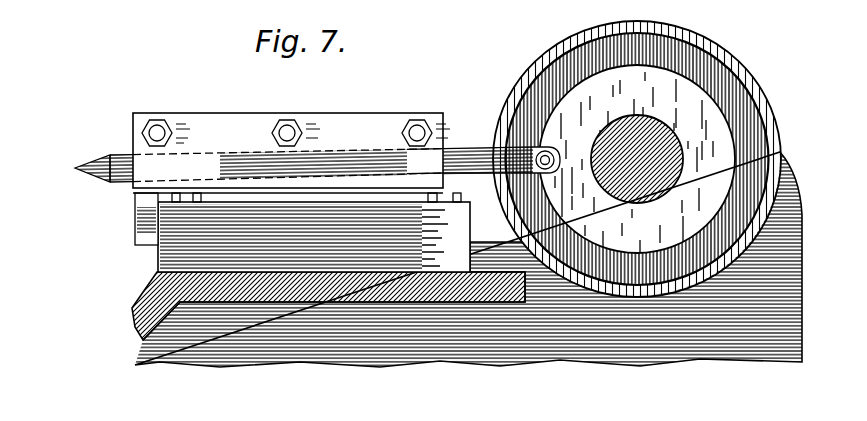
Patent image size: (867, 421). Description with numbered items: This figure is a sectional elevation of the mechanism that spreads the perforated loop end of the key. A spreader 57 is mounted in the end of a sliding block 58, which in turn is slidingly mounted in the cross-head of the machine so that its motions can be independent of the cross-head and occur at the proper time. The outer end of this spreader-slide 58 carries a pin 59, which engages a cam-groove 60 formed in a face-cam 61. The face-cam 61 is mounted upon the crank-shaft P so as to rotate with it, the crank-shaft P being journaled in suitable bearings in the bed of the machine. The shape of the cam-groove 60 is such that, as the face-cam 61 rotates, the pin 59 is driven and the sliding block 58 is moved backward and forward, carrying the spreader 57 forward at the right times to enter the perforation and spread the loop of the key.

The spreader 57 is at (96, 157).
The sliding block 58 is at (123, 179).
The pin 59 is at (527, 148).
The cam-groove 60 is at (710, 94).
The face-cam 61 is at (727, 63).
The crank-shaft P is at (600, 168).